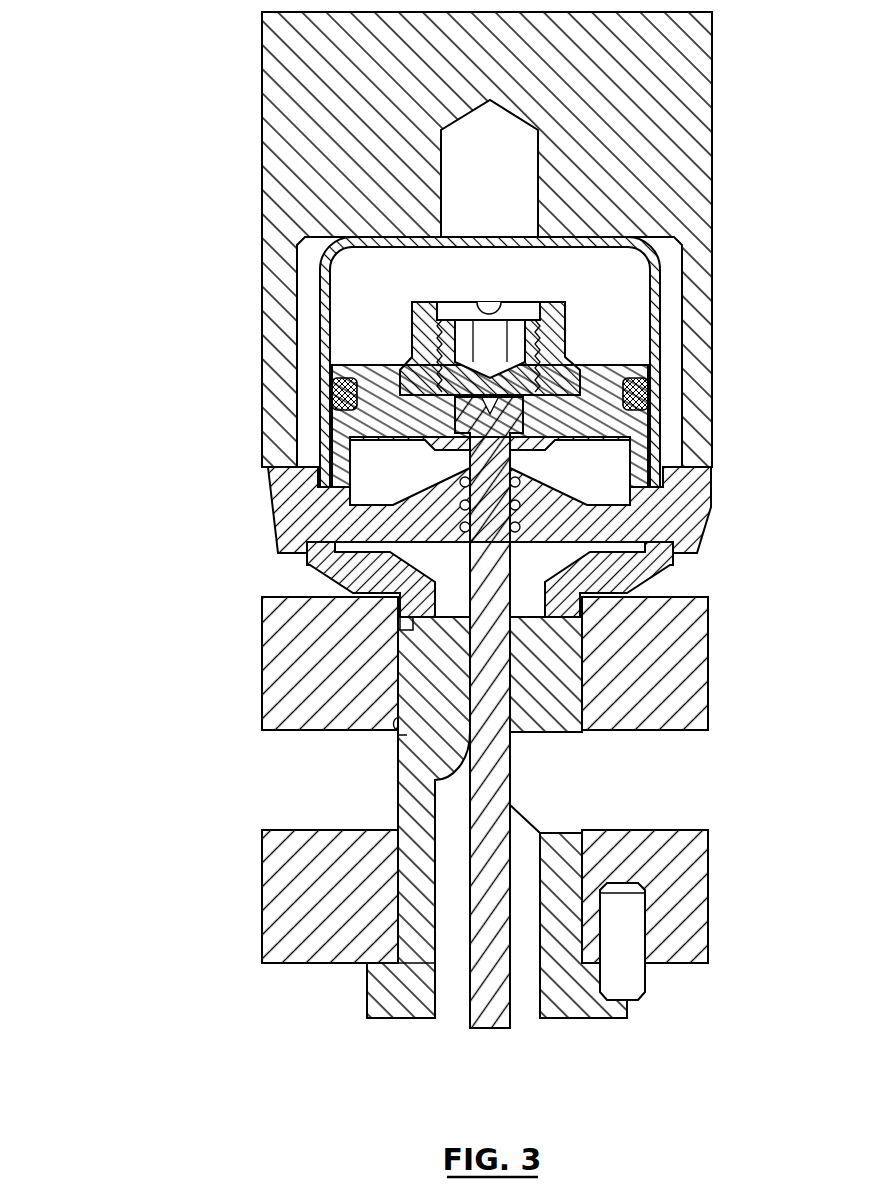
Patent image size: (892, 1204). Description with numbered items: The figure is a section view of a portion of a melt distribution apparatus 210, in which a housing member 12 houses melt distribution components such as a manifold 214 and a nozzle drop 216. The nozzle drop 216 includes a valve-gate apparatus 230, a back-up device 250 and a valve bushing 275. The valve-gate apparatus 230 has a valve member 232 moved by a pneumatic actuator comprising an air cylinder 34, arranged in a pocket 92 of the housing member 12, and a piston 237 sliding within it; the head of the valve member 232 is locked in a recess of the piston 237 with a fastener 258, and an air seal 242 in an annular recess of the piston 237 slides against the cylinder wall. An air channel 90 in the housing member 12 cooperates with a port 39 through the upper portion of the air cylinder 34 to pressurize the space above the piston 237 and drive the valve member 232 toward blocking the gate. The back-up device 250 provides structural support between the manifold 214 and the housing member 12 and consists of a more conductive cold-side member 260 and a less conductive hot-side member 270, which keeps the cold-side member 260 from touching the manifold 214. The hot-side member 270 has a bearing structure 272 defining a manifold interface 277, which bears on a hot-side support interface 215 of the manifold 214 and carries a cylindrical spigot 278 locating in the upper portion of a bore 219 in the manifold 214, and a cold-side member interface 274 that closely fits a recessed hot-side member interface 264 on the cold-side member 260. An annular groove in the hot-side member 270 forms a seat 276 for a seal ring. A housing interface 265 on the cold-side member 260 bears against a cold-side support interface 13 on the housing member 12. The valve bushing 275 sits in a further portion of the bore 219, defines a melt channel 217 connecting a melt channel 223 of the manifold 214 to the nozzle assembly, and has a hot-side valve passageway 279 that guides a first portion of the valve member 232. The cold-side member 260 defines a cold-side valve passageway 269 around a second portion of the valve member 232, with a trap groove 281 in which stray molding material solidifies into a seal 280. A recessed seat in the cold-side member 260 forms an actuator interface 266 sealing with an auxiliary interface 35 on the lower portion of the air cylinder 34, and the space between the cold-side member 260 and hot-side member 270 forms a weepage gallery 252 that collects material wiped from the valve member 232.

The housing member 12 is at (694, 65).
The air channel 90 is at (473, 193).
The air cylinder 34 is at (664, 325).
The port 39 is at (575, 243).
The piston 237 is at (638, 425).
The air seal 242 is at (648, 394).
The fastener 258 is at (548, 344).
The cold-side member 260 is at (264, 505).
The trap groove 281 is at (462, 480).
The seal 280 is at (520, 494).
The actuator interface 266 is at (368, 442).
The cold-side valve passageway 269 is at (484, 521).
The hot-side member interface 264 is at (313, 564).
The bearing structure 272 is at (690, 580).
The hot-side member 270 is at (274, 570).
The manifold 214 is at (272, 912).
The melt channel 223 is at (700, 830).
The valve bushing 275 is at (394, 770).
The cylindrical spigot 278 is at (398, 614).
The bore 219 is at (400, 735).
The melt channel 217 is at (440, 1000).
The hot-side valve passageway 279 is at (516, 716).
The valve member 232 is at (498, 1030).
The pocket 92 is at (640, 972).
The valve-gate apparatus 230 is at (300, 418).
The auxiliary interface 35 is at (314, 478).
The housing interface 265 is at (692, 457).
The cold-side support interface 13 is at (697, 478).
The cold-side member interface 274 is at (674, 530).
The seat 276 is at (405, 568).
The weepage gallery 252 is at (518, 573).
The hot-side support interface 215 is at (563, 586).
The manifold interface 277 is at (602, 626).
The melt distribution apparatus 210 is at (738, 950).
The back-up device 250 is at (152, 490).
The nozzle drop 216 is at (86, 423).